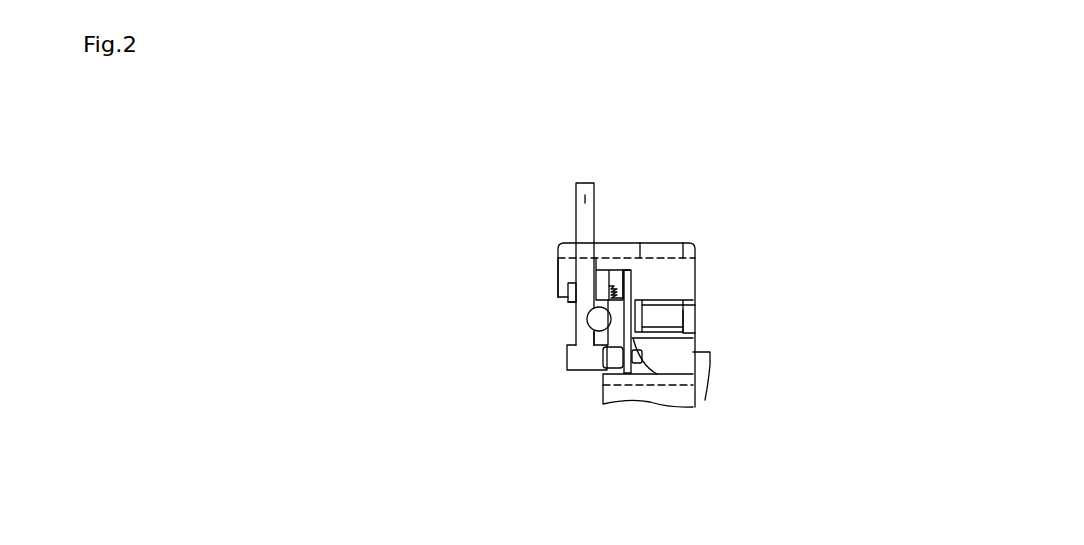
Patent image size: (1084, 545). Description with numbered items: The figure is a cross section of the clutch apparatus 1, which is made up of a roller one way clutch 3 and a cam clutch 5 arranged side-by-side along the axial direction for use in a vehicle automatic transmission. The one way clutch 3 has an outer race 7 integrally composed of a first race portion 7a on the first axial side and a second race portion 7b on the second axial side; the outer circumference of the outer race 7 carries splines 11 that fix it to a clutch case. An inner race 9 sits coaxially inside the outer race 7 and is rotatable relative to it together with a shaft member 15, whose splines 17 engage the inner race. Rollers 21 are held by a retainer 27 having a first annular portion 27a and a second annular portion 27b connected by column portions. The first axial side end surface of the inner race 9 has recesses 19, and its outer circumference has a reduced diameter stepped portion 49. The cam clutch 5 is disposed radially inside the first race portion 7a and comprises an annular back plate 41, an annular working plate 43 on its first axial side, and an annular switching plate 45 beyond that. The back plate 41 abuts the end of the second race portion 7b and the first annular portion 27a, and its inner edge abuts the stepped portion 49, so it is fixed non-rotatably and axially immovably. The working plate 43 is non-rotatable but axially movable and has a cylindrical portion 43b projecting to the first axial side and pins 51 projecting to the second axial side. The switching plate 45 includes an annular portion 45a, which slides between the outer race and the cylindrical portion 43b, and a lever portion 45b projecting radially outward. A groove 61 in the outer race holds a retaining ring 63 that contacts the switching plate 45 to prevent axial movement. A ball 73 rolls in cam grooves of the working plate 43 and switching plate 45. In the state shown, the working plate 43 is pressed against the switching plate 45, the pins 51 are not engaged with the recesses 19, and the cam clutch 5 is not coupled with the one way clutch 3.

The clutch apparatus 1 is at (767, 156).
The roller one way clutch 3 is at (879, 212).
The cam clutch 5 is at (597, 424).
The outer race 7 is at (704, 264).
The first race portion 7a is at (566, 262).
The second race portion 7b is at (655, 270).
The inner race 9 is at (678, 345).
The splines 11 is at (683, 252).
The shaft member 15 is at (680, 393).
The splines 17 is at (597, 382).
The recesses 19 is at (657, 375).
The rollers 21 is at (667, 316).
The retainer 27 is at (836, 277).
The first annular portion 27a is at (665, 307).
The second annular portion 27b is at (690, 325).
The back plate 41 is at (636, 272).
The working plate 43 is at (600, 282).
The cylindrical portion 43b is at (568, 360).
The switching plate 45 is at (572, 181).
The annular portion 45a is at (585, 338).
The lever portion 45b is at (585, 203).
The reduced diameter stepped portion 49 is at (700, 358).
The pins 51 is at (602, 364).
The groove 61 is at (566, 281).
The retaining ring 63 is at (564, 298).
The ball 73 is at (590, 318).